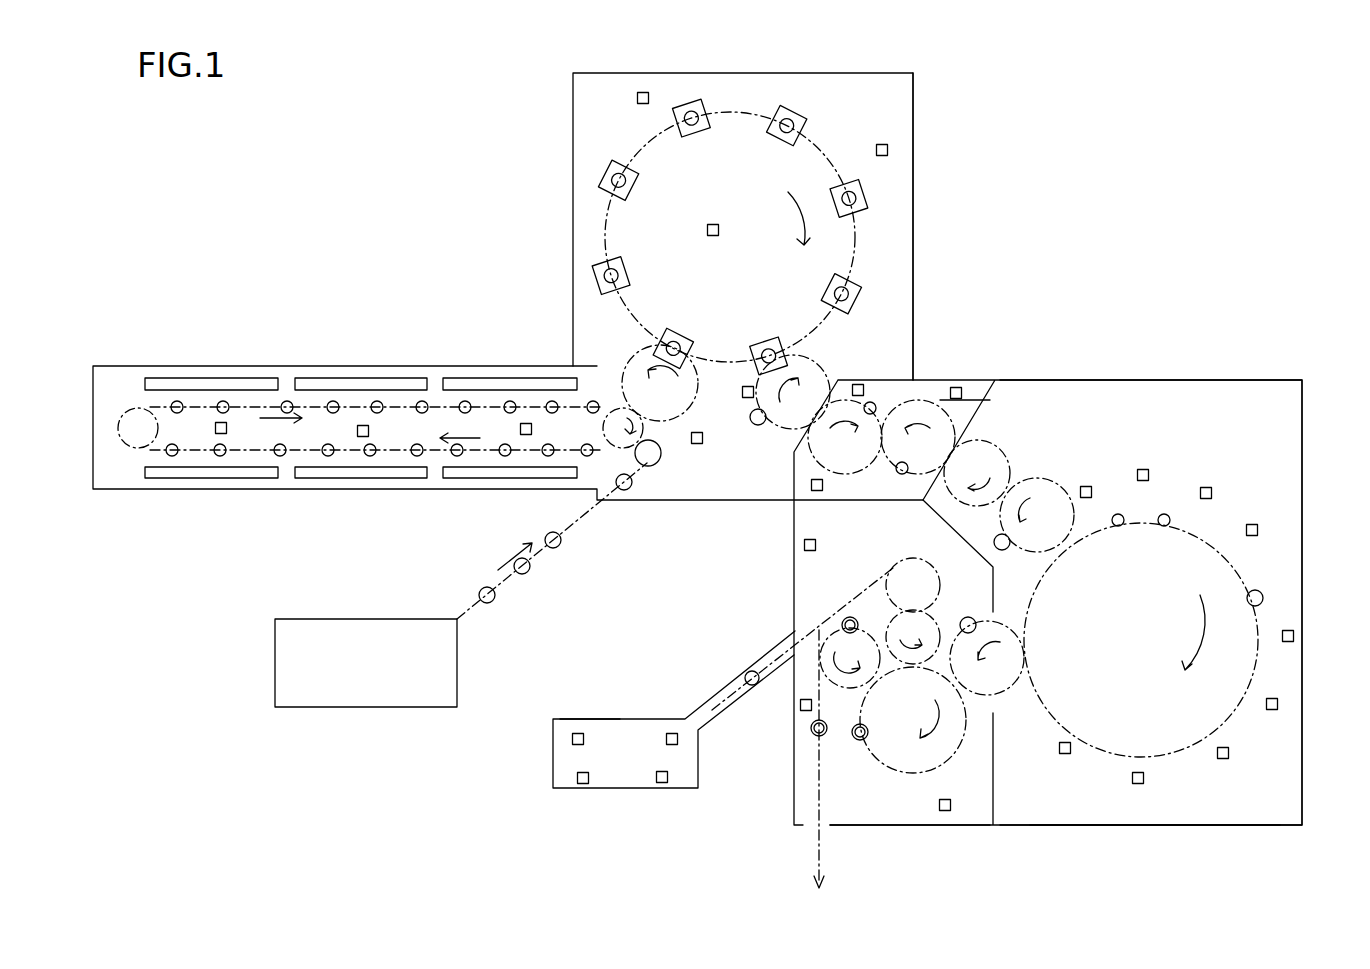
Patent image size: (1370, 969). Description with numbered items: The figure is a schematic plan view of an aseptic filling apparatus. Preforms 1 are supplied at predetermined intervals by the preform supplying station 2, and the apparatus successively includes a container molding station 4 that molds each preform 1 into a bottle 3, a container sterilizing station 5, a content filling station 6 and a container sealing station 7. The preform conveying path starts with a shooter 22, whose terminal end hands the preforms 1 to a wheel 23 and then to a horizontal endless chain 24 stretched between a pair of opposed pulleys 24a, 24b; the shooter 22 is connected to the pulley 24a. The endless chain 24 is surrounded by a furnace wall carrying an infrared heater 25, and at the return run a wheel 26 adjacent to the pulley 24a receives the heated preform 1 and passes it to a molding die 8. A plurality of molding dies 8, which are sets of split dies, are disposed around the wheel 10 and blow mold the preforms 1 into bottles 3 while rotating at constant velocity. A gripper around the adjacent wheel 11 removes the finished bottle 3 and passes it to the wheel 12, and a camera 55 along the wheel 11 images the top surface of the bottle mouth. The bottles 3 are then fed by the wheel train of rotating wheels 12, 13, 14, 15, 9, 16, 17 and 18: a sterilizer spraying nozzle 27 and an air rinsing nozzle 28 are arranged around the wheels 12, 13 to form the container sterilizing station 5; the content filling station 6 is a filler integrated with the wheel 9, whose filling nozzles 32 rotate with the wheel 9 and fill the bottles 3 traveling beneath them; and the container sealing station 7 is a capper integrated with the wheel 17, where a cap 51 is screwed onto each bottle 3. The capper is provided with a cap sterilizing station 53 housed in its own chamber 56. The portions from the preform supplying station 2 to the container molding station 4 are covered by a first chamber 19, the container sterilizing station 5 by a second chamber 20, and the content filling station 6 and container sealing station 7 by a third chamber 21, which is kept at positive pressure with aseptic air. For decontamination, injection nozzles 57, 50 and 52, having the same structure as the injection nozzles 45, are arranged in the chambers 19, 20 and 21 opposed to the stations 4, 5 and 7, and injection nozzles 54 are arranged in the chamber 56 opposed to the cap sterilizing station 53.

The preform 1 is at (625, 278).
The preform supplying station 2 is at (318, 726).
The bottle 3 is at (860, 195).
The container molding station 4 is at (584, 137).
The container sterilizing station 5 is at (960, 373).
The content filling station 6 is at (1103, 777).
The container sealing station 7 is at (916, 788).
The molding die 8 is at (618, 165).
The wheel 9 is at (1195, 527).
The wheel 10 is at (732, 112).
The wheel 11 is at (793, 355).
The wheel 12 is at (810, 445).
The wheel 13 is at (930, 400).
The wheel 14 is at (995, 448).
The wheel 15 is at (1062, 490).
The wheel 16 is at (1007, 687).
The wheel 17 is at (870, 770).
The wheel 18 is at (836, 628).
The first chamber 19 is at (913, 118).
The second chamber 20 is at (897, 380).
The third chamber 21 is at (1075, 380).
The shooter 22 is at (578, 528).
The wheel 23 is at (660, 462).
The endless chain 24 is at (307, 405).
The pulley 24a is at (603, 425).
The pulley 24b is at (125, 448).
The heater 25 is at (420, 378).
The wheel 26 is at (648, 362).
The sterilizer spraying nozzle 27 is at (871, 402).
The air rinsing nozzle 28 is at (902, 476).
The filling nozzle 32 is at (1164, 514).
The injection nozzle 45 is at (1206, 488).
The injection nozzle 50 is at (858, 385).
The cap 51 is at (748, 672).
The injection nozzle 52 is at (804, 546).
The cap sterilizing station 53 is at (626, 804).
The injection nozzle 54 is at (672, 733).
The camera 55 is at (746, 387).
The chamber 56 is at (590, 719).
The injection nozzle 57 is at (643, 92).